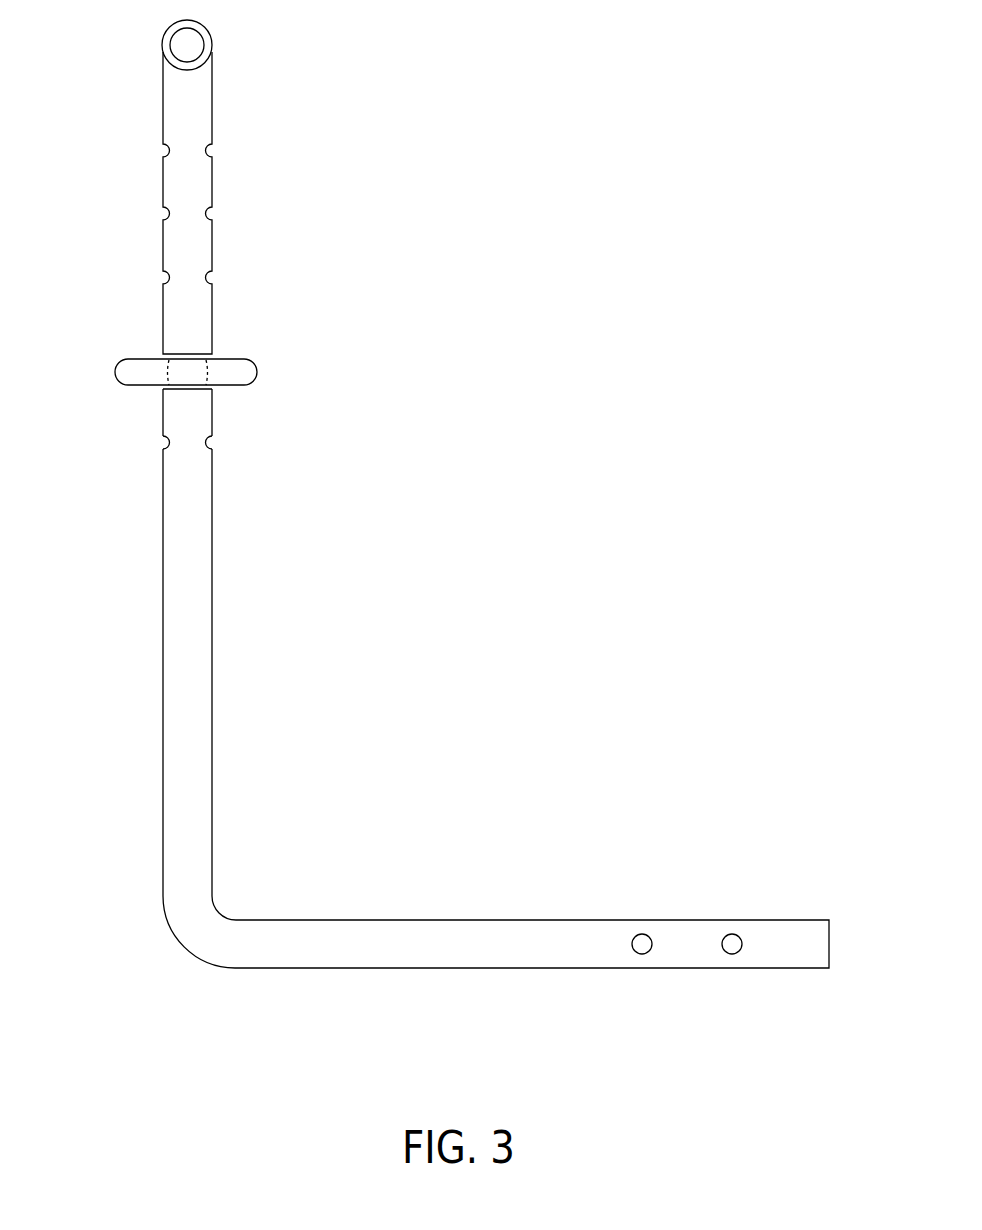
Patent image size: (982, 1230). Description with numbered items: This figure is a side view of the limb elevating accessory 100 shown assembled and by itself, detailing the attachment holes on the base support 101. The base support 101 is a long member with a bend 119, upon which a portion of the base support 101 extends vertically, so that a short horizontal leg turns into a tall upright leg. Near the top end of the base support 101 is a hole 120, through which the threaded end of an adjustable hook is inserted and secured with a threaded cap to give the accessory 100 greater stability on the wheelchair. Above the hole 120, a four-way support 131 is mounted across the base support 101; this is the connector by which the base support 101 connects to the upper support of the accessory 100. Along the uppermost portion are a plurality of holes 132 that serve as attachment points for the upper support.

The limb elevating accessory 100 is at (438, 494).
The base support 101 is at (496, 678).
The bend 119 is at (217, 908).
The hole 120 is at (212, 440).
The 4-way support 131 is at (250, 371).
The plurality of holes 132 is at (140, 133).